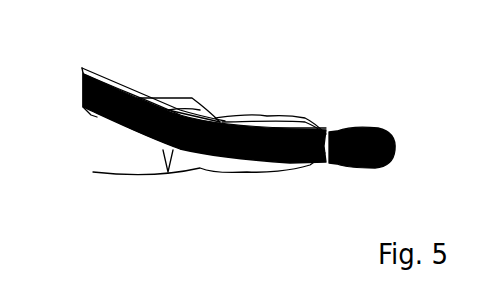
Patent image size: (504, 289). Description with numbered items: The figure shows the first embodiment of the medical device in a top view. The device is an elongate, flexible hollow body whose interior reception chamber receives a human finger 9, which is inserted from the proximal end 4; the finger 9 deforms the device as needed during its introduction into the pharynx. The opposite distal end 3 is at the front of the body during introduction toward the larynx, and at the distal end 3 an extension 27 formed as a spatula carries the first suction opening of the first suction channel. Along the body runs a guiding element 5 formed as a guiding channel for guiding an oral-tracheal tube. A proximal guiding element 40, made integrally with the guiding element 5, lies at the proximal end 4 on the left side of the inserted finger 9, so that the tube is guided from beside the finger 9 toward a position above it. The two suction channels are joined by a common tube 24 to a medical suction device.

The distal end 3 is at (391, 173).
The proximal end 4 is at (63, 91).
The guiding element 5 is at (82, 103).
The human finger 9 is at (188, 163).
The common tube 24 is at (167, 100).
The extension 27 is at (384, 132).
The proximal guiding element 40 is at (97, 78).